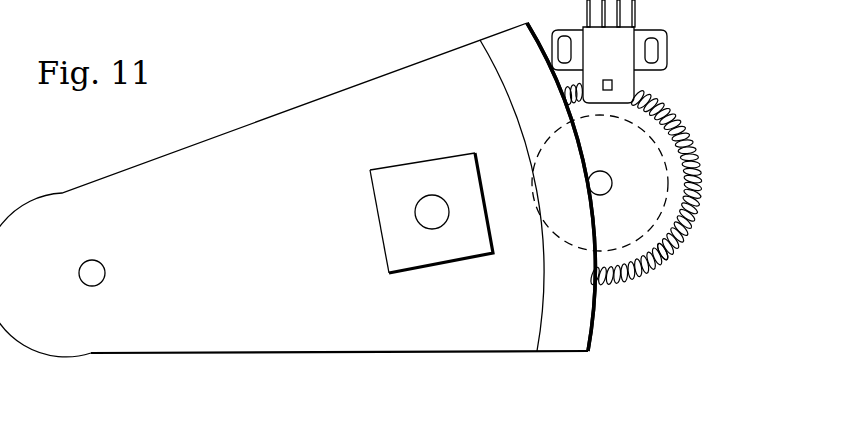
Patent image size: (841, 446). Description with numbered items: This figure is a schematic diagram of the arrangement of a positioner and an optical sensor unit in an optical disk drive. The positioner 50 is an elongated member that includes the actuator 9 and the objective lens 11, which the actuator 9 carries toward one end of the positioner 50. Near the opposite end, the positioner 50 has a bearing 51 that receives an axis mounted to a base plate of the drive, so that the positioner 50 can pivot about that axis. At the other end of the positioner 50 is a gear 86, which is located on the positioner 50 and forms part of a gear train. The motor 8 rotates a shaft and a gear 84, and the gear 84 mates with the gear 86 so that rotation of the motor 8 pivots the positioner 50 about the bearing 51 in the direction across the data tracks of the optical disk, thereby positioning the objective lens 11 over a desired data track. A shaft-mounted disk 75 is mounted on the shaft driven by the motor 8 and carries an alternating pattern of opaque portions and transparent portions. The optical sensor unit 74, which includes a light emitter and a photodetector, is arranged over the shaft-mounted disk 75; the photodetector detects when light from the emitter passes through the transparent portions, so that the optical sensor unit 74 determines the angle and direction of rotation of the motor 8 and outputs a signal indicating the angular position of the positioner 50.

The positioner 50 is at (285, 301).
The bearing 51 is at (96, 260).
The actuator 9 is at (445, 157).
The objective lens 11 is at (419, 200).
The optical sensor unit 74 is at (620, 79).
The shaft-mounted disk 75 is at (683, 178).
The gear 84 is at (603, 198).
The motor 8 is at (634, 250).
The gear 86 is at (596, 312).